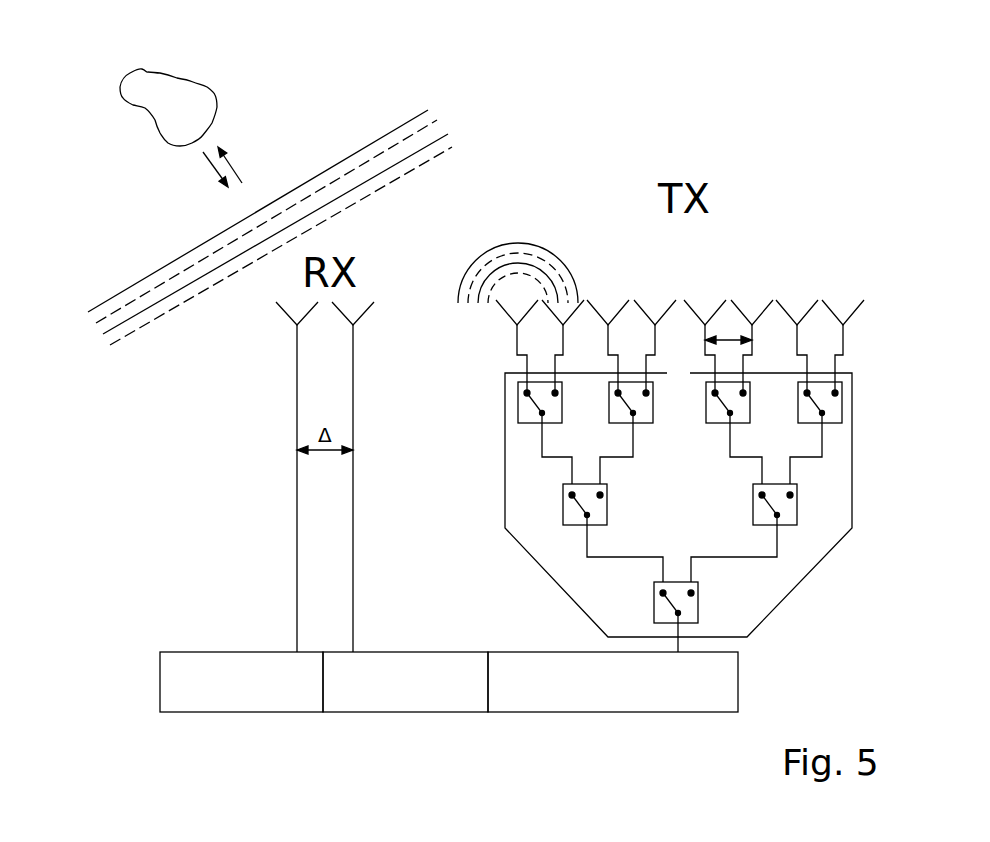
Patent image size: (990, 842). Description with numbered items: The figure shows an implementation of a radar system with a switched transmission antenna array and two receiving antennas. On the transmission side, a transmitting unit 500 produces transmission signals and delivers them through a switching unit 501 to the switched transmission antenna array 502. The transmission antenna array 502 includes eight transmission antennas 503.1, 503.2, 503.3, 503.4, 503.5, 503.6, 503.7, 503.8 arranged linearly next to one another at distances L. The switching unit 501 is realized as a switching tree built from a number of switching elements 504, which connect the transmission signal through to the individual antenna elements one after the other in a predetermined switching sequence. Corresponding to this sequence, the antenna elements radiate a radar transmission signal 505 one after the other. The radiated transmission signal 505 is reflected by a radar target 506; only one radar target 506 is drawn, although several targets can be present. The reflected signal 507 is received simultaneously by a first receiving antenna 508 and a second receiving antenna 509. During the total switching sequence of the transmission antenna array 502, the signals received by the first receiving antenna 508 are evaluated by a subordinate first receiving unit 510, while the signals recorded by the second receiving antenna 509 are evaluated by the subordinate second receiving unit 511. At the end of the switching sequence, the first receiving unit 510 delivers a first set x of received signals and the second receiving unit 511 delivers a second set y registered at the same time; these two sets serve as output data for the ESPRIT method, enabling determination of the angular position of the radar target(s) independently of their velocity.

The transmitting unit 500 is at (646, 696).
The switching unit 501 is at (853, 497).
The switched transmission antenna array 502 is at (882, 351).
The transmission antenna 503.1 is at (503, 307).
The transmission antenna 503.2 is at (560, 313).
The transmission antenna 503.3 is at (610, 310).
The transmission antenna 503.4 is at (670, 308).
The transmission antenna 503.5 is at (714, 310).
The transmission antenna 503.6 is at (766, 303).
The transmission antenna 503.7 is at (807, 310).
The transmission antenna 503.8 is at (856, 303).
The switching element 504 is at (609, 402).
The radar transmission signal 505 is at (545, 247).
The radar target 506 is at (177, 90).
The reflected signal 507 is at (294, 216).
The first receiving antenna 508 is at (295, 517).
The second receiving antenna 509 is at (354, 520).
The first receiving unit 510 is at (262, 696).
The second receiving unit 511 is at (425, 696).